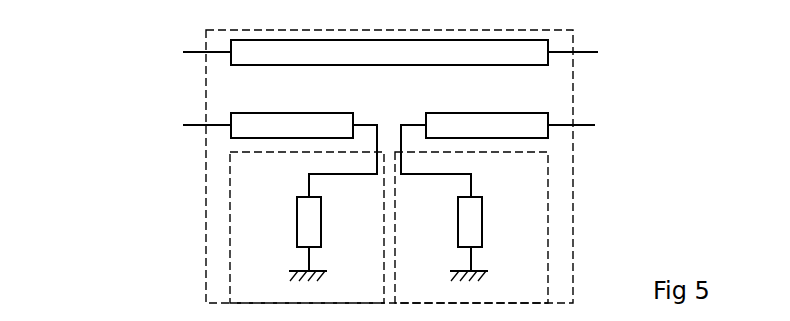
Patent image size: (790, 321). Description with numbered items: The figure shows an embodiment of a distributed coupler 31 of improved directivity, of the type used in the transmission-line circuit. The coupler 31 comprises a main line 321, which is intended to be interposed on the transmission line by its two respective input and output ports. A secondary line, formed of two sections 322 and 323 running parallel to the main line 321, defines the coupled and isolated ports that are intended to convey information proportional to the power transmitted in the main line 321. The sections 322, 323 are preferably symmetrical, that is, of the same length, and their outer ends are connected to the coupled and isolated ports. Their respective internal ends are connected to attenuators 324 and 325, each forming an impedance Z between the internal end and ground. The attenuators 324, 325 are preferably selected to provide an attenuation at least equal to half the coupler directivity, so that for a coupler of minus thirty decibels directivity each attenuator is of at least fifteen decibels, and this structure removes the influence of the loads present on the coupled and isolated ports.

The coupler 31 is at (142, 208).
The main line 321 is at (328, 50).
The section of the secondary line 322 is at (288, 119).
The section of the secondary line 323 is at (475, 119).
The attenuator 324 is at (230, 224).
The attenuator 325 is at (548, 225).